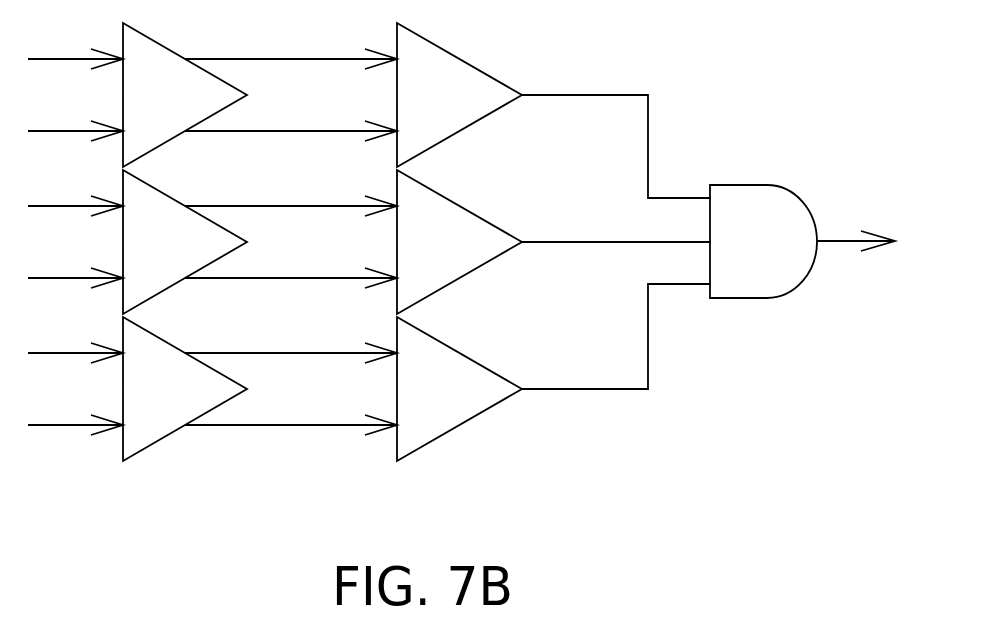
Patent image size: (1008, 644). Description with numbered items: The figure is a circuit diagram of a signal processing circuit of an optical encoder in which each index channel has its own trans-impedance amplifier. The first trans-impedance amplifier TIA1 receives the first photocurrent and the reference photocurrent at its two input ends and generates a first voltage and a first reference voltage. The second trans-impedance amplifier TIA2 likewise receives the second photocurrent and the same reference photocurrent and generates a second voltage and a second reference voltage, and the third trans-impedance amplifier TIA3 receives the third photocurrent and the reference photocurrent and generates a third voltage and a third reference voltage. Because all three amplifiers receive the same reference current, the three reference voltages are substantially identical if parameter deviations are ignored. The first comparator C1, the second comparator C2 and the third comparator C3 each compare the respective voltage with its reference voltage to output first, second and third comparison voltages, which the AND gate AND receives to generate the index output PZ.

The first trans-impedance amplifier TIA1 is at (212, 91).
The second trans-impedance amplifier TIA2 is at (212, 240).
The third trans-impedance amplifier TIA3 is at (212, 388).
The first comparator C1 is at (553, 110).
The second comparator C2 is at (553, 242).
The third comparator C3 is at (553, 372).
The AND gate AND is at (802, 241).